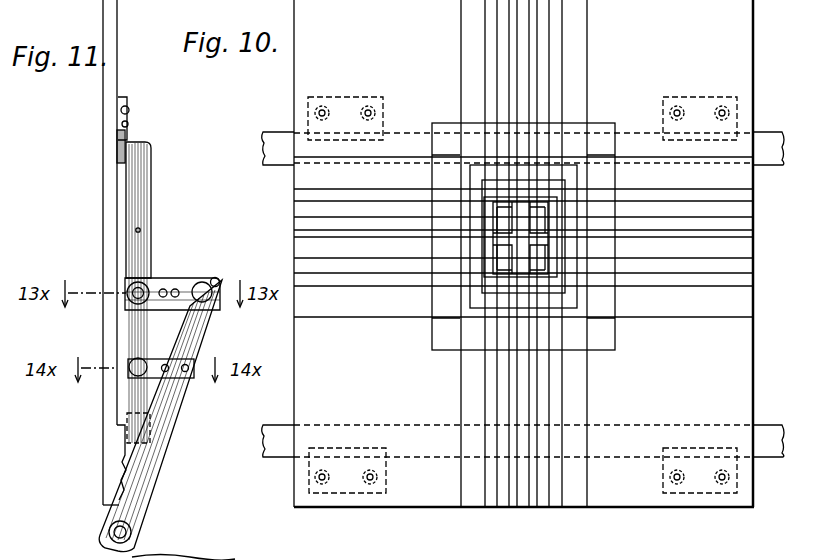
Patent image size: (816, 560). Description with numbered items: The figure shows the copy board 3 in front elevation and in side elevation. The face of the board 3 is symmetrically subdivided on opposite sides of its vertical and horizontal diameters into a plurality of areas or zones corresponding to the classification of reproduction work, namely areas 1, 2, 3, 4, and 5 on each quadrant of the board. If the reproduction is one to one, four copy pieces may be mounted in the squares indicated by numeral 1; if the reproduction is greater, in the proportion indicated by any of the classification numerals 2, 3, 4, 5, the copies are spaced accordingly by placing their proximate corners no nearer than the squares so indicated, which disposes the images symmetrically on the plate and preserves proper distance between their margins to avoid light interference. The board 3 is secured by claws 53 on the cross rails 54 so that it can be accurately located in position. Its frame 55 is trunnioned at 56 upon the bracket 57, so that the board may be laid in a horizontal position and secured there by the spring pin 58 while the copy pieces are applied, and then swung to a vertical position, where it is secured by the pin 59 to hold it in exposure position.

In FIG. 10, the area or zone 1 is at (530, 228).
In FIG. 10, the area or zone 2 is at (540, 212).
In FIG. 11, the copy board 3 is at (103, 105).
In FIG. 10, the copy board 3 is at (557, 277).
In FIG. 10, the area or zone 4 is at (565, 181).
In FIG. 10, the area or zone 5 is at (588, 155).
In FIG. 11, the claws 53 is at (128, 130).
In FIG. 10, the claws 53 is at (343, 97).
In FIG. 11, the cross rails 54 is at (117, 150).
In FIG. 10, the cross rails 54 is at (772, 165).
In FIG. 11, the frame 55 is at (150, 178).
In FIG. 11, the trunnion 56 is at (150, 278).
In FIG. 11, the bracket 57 is at (203, 322).
In FIG. 11, the spring pin 58 is at (207, 281).
In FIG. 11, the pin 59 is at (148, 376).